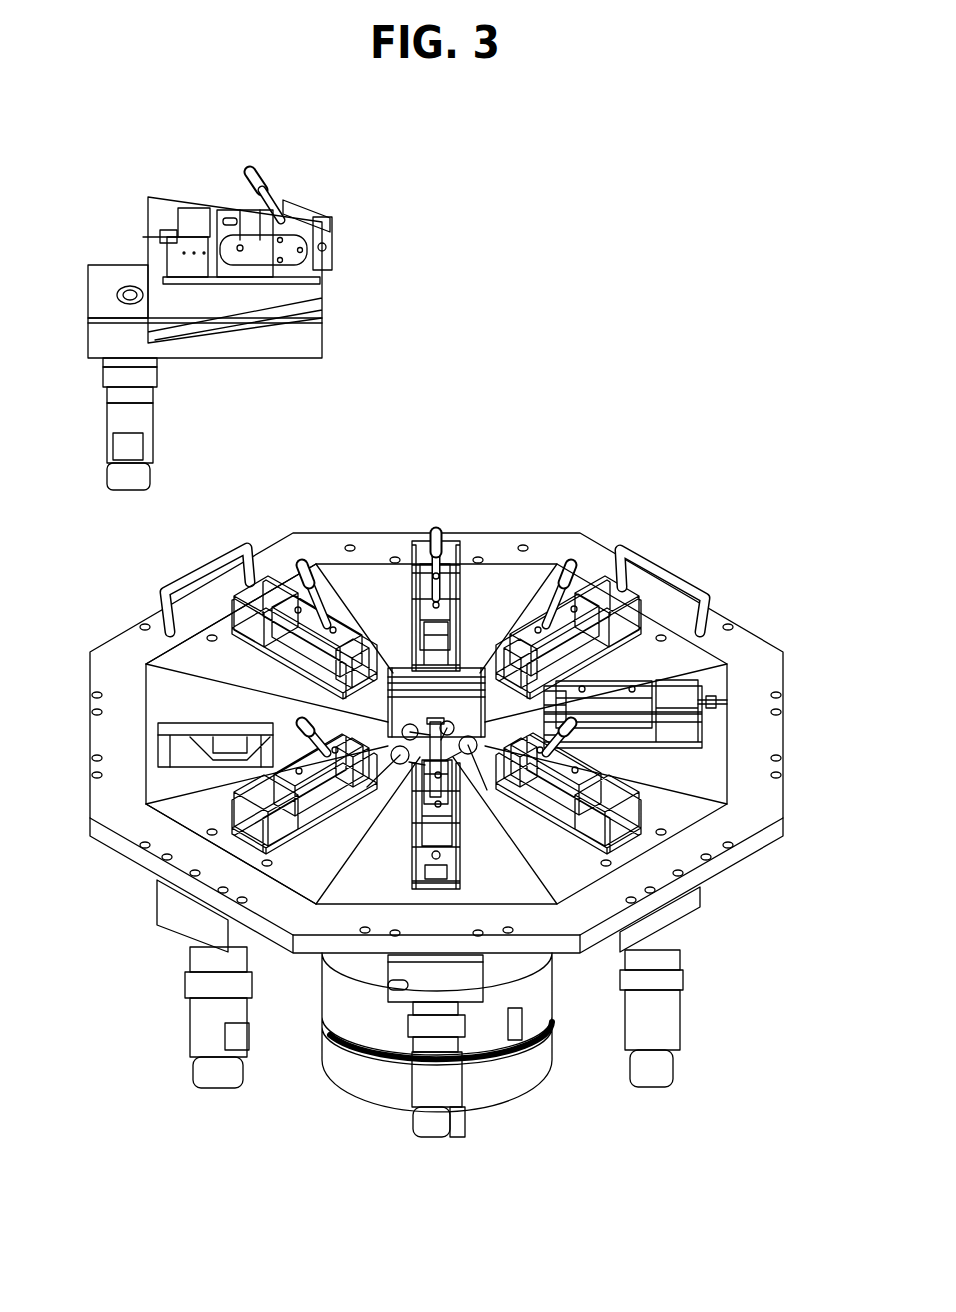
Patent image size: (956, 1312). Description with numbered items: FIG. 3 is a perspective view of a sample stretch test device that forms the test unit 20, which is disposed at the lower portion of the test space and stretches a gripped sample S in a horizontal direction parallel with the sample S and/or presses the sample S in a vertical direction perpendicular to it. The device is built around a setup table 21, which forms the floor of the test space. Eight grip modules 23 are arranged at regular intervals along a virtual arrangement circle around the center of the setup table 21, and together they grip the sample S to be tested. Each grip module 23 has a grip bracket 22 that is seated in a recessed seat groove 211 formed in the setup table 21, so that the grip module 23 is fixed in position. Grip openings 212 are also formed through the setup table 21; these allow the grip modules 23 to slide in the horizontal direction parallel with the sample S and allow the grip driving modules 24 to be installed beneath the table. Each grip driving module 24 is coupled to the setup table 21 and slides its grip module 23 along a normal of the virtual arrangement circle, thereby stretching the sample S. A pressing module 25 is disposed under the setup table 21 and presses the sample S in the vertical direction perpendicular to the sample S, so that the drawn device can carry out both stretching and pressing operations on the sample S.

The test unit 20 is at (503, 262).
The setup table 21 is at (558, 526).
The grip bracket 22 is at (172, 190).
The grip module 23 is at (316, 196).
The grip driving module 24 is at (170, 428).
The pressing module 25 is at (352, 1120).
The seat groove 211 is at (199, 714).
The grip opening 212 is at (173, 750).
The sample S is at (405, 662).